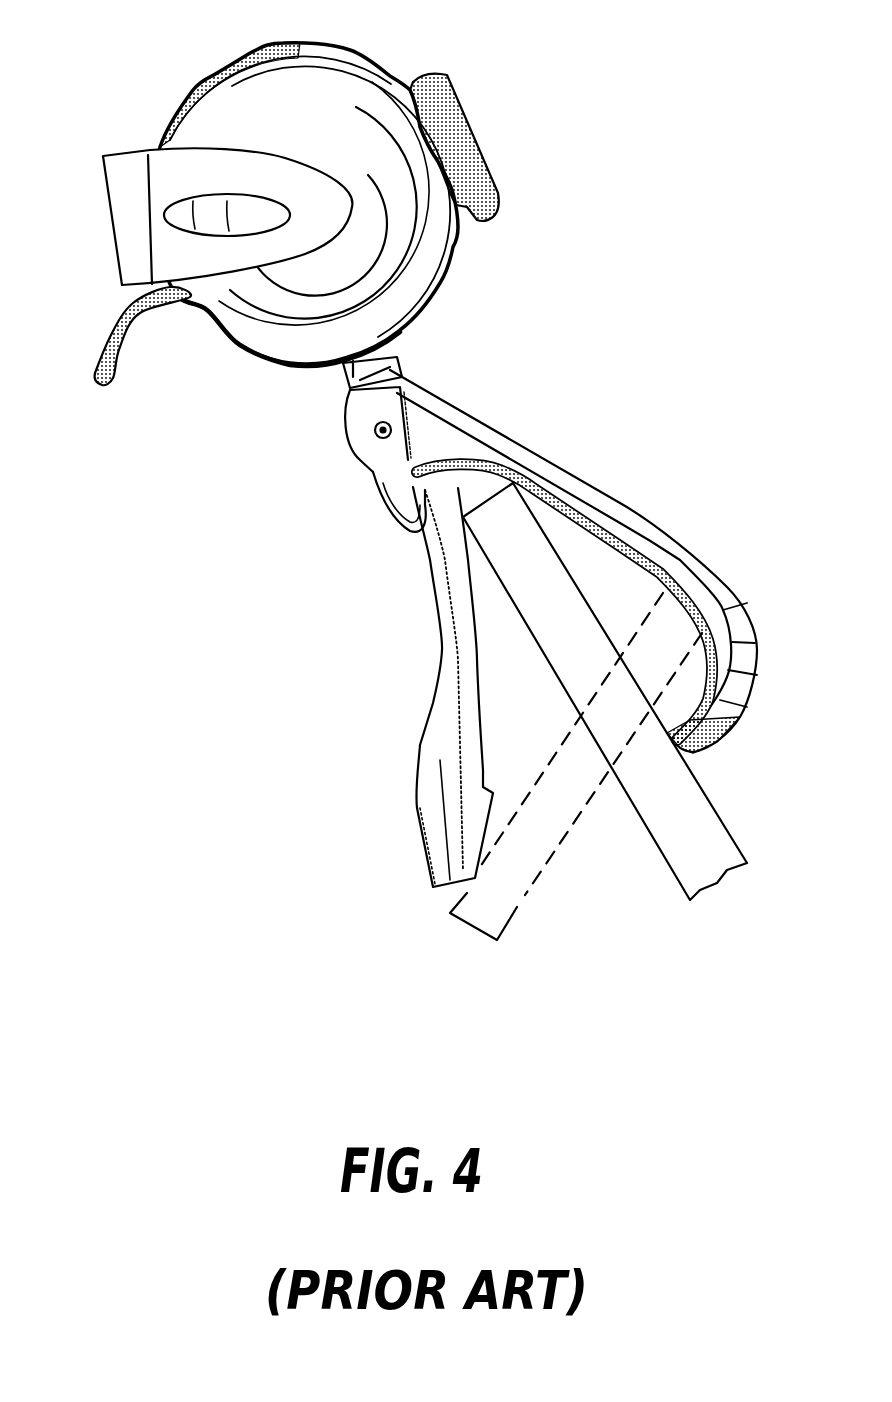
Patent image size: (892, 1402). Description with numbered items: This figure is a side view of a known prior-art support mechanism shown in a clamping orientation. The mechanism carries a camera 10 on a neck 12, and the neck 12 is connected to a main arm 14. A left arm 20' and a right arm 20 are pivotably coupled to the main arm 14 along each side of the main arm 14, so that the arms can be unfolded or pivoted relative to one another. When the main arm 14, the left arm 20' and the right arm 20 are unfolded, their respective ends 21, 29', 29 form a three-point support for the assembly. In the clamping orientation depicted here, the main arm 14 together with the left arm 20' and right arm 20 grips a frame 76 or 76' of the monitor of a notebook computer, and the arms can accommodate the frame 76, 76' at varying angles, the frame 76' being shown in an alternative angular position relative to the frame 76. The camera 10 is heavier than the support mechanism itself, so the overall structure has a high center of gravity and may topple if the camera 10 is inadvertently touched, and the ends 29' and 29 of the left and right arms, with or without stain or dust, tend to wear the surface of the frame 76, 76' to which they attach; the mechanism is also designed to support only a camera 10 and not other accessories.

The camera 10 is at (338, 46).
The neck 12 is at (350, 383).
The main arm 14 is at (430, 700).
The right arm 20 is at (573, 561).
The left arm 20' is at (564, 602).
The end of the main arm 21 is at (450, 887).
The end of the right arm 29 is at (766, 682).
The end of the left arm 29' is at (703, 735).
The frame of a monitor 76 is at (611, 691).
The frame of a monitor 76' is at (576, 766).